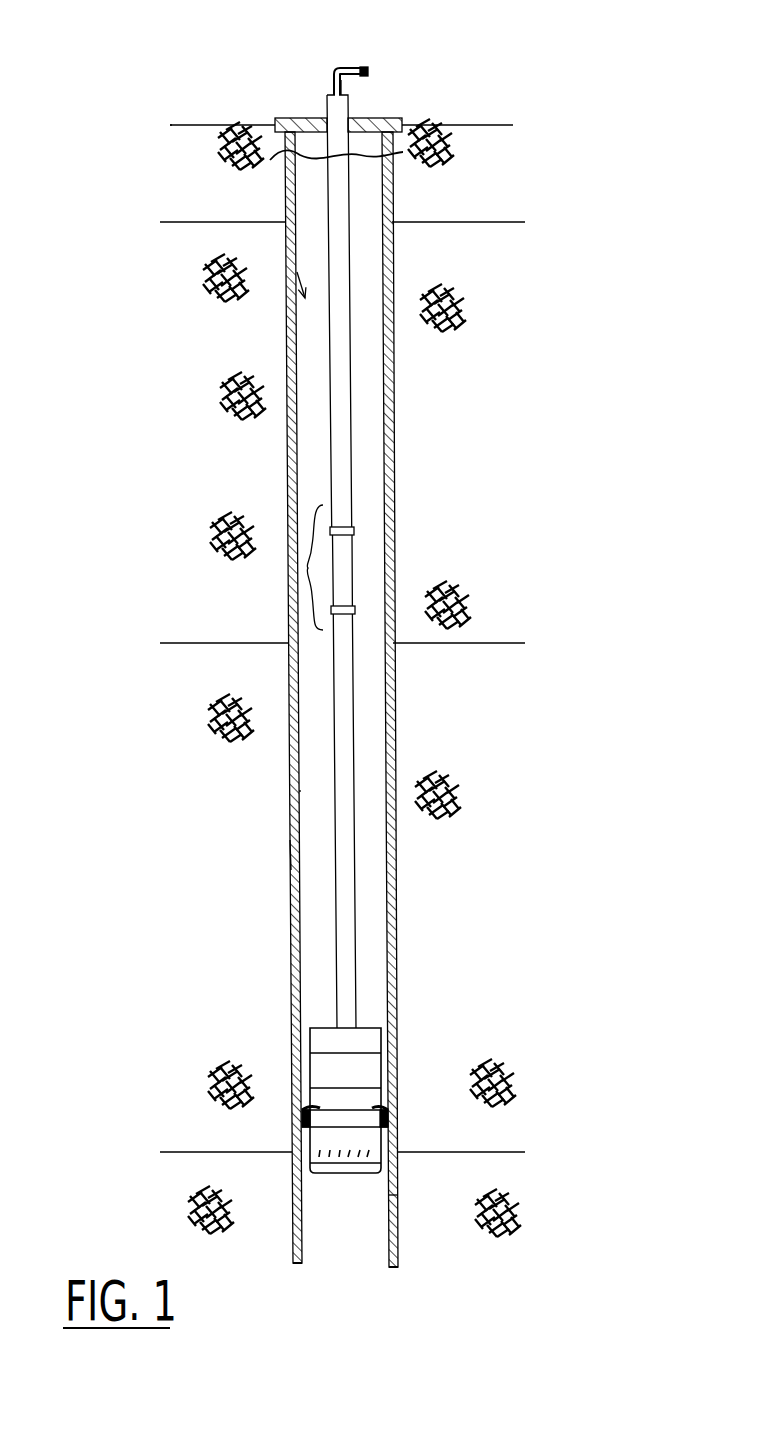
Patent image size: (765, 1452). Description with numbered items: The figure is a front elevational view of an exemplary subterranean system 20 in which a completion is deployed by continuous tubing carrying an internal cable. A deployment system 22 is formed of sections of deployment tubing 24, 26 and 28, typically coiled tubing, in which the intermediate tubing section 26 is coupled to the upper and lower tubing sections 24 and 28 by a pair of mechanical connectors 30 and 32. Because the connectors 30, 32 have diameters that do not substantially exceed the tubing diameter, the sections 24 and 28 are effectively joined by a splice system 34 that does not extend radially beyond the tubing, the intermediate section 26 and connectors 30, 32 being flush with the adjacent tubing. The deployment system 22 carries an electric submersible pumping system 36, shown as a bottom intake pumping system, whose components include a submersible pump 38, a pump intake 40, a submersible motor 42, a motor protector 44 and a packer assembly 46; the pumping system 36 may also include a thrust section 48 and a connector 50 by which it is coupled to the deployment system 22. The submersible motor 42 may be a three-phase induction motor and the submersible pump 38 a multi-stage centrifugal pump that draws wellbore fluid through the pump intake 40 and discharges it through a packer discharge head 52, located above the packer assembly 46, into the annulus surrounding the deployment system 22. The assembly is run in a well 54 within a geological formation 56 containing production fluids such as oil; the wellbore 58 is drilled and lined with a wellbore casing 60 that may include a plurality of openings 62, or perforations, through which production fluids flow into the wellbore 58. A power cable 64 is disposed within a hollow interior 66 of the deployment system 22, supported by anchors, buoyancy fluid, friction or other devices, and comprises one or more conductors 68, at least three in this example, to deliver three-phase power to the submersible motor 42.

The subterranean system 20 is at (522, 160).
The deployment system 22 is at (362, 292).
The deployment tubing section 24 is at (343, 440).
The intermediate tubing section 26 is at (343, 572).
The deployment tubing section 28 is at (347, 788).
The mechanical connector 30 is at (352, 532).
The mechanical connector 32 is at (350, 613).
The splice system 34 is at (312, 568).
The electric submersible pumping system 36 is at (368, 1010).
The submersible pump 38 is at (375, 1138).
The pump intake 40 is at (381, 1154).
The submersible motor 42 is at (372, 1068).
The motor protector 44 is at (365, 1098).
The packer assembly 46 is at (305, 1116).
The thrust section 48 is at (398, 1195).
The connector 50 is at (368, 1040).
The packer discharge head 52 is at (310, 1112).
The well 54 is at (288, 263).
The geological formation 56 is at (198, 806).
The wellbore 58 is at (322, 782).
The wellbore casing 60 is at (300, 862).
The openings 62 is at (293, 1195).
The power cable 64 is at (341, 67).
The hollow interior 66 is at (349, 84).
The conductors 68 is at (366, 62).